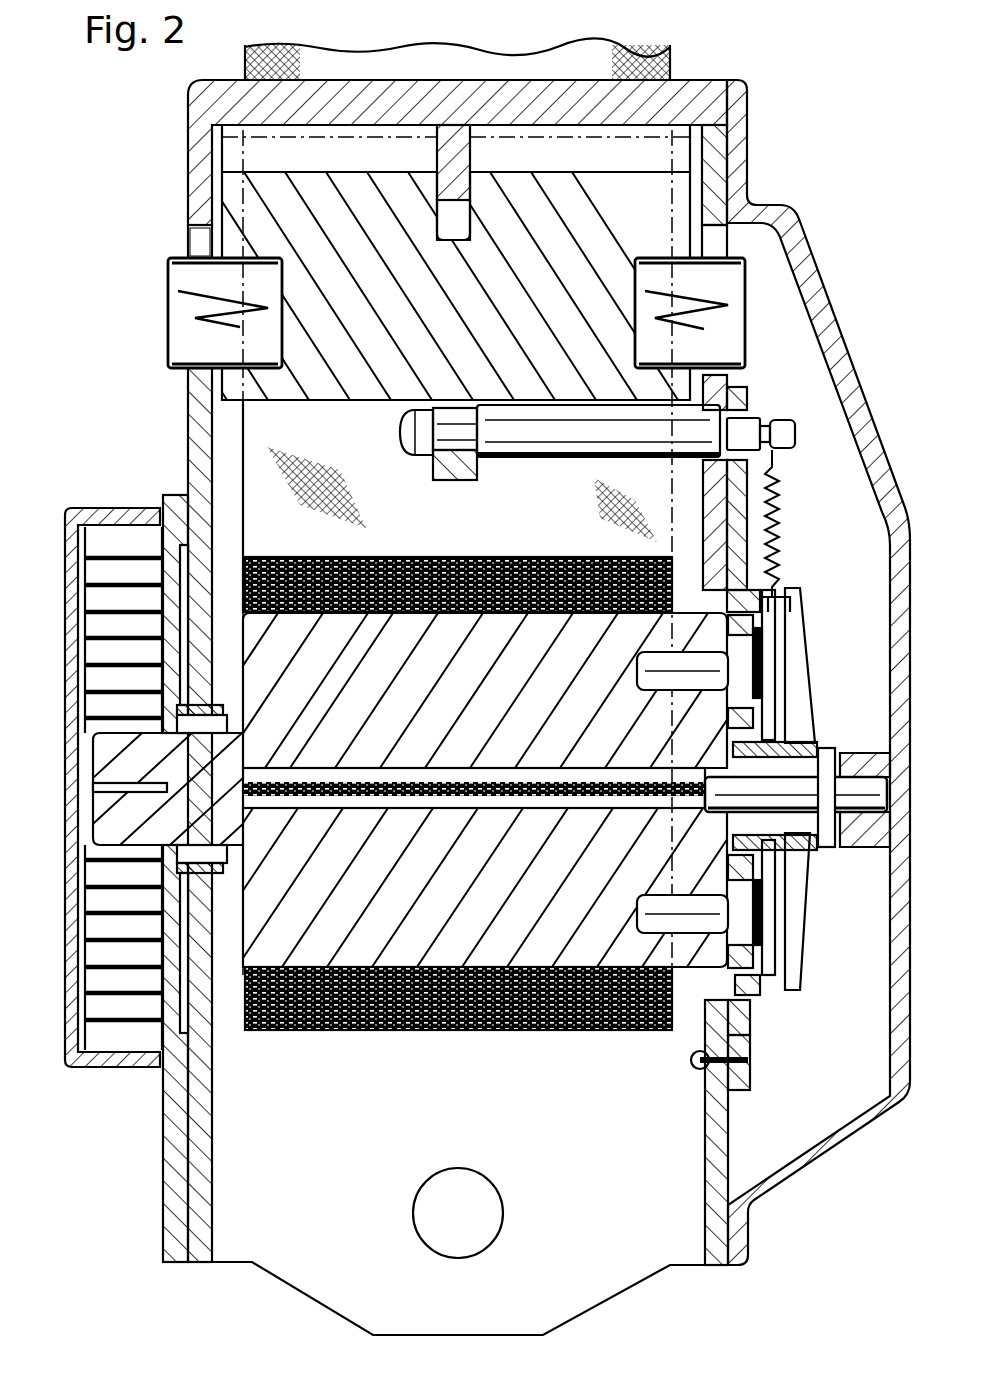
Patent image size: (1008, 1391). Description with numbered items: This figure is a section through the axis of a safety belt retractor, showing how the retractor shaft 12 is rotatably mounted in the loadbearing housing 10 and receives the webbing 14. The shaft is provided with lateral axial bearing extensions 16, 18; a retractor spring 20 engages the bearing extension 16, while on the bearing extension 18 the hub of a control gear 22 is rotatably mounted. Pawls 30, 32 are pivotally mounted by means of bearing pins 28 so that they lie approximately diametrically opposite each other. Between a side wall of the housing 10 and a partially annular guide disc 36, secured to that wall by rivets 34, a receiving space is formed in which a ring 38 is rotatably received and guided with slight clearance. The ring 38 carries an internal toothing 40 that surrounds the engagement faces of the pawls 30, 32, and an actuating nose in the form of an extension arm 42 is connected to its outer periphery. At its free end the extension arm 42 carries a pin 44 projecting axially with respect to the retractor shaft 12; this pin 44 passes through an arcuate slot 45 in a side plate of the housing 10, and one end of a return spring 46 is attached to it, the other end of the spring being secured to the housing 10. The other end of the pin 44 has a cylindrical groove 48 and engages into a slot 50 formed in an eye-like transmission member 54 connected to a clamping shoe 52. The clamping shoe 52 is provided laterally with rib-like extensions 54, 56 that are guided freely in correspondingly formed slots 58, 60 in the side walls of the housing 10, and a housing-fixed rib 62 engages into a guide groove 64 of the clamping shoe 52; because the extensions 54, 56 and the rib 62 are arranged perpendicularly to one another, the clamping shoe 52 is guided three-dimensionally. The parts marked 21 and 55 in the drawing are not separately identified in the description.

The housing 10 is at (312, 1268).
The retractor shaft 12 is at (420, 965).
The webbing 14 is at (570, 1022).
The bearing extension 16 is at (100, 818).
The bearing extension 18 is at (808, 768).
The retractor spring 20 is at (108, 1068).
The nut 21 is at (808, 850).
The control gear 22 is at (800, 695).
The bearing pins 28 is at (690, 665).
The pawl 30 is at (762, 618).
The pawl 32 is at (762, 960).
The rivets 34 is at (748, 1068).
The guide disc 36 is at (755, 1050).
The ring 38 is at (752, 1020).
The internal toothing 40 is at (745, 985).
The extension arm 42 is at (752, 500).
The pin 44 is at (578, 440).
The arcuate slot 45 is at (772, 467).
The return spring 46 is at (780, 540).
The cylindrical groove 48 is at (462, 480).
The slot 50 is at (403, 430).
The clamping shoe 52 is at (333, 192).
The extension 54 is at (440, 470).
The bearing 55 is at (172, 290).
The extension 56 is at (740, 302).
The slot 58 is at (192, 235).
The slot 60 is at (715, 240).
The rib 62 is at (478, 158).
The guide groove 64 is at (435, 205).